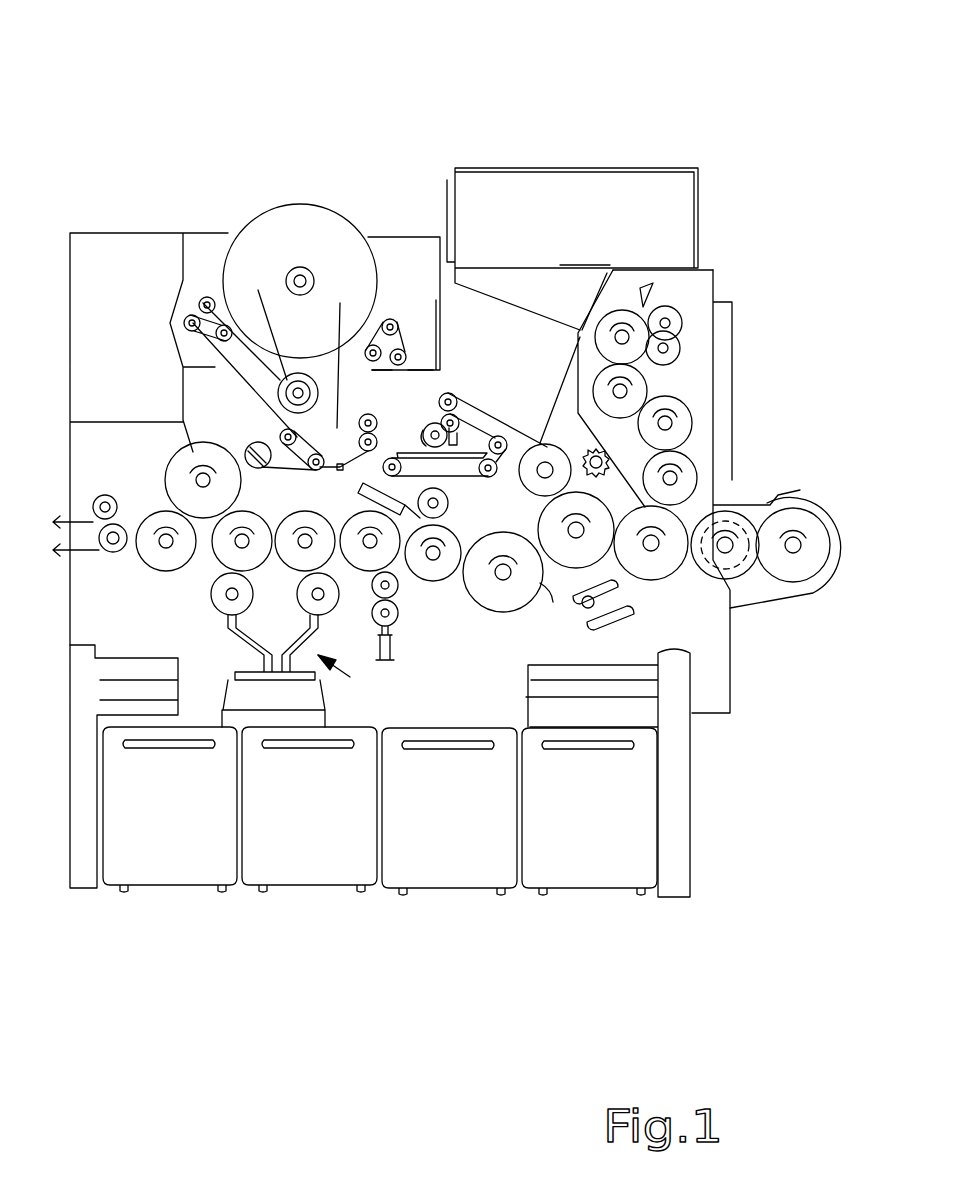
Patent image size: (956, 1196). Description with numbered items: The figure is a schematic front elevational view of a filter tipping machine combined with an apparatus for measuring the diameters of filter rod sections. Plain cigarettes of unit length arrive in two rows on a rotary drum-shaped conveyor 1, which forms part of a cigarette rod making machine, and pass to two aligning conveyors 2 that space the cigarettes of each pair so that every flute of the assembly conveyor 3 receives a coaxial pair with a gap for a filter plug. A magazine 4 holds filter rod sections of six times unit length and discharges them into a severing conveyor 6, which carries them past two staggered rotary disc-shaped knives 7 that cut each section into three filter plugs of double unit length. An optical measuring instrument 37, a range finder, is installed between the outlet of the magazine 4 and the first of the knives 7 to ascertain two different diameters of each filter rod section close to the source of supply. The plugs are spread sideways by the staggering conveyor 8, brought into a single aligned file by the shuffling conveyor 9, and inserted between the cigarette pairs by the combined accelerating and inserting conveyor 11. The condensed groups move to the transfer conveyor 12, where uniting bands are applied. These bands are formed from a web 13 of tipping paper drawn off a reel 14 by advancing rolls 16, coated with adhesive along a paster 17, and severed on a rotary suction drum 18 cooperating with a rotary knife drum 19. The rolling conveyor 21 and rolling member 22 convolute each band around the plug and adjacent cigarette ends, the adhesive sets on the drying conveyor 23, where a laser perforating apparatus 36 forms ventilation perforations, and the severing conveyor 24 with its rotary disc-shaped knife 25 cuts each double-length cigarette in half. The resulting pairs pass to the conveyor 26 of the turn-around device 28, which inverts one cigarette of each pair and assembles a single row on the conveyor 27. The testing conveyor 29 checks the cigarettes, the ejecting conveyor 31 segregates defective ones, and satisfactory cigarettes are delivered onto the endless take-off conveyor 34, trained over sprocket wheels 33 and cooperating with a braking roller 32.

The rotary drum-shaped conveyor 1 is at (784, 571).
The aligning conveyors 2 is at (752, 560).
The assembly conveyor 3 is at (690, 562).
The magazine 4 is at (633, 197).
The severing conveyor 6 is at (612, 310).
The rotary disc-shaped knives 7 is at (675, 347).
The staggering conveyor 8 is at (637, 397).
The shuffling conveyor 9 is at (678, 427).
The combined accelerating and inserting conveyor 11 is at (688, 482).
The transfer conveyor 12 is at (606, 560).
The web of tipping paper 13 is at (292, 430).
The bobbin or reel 14 is at (258, 290).
The advancing rolls 16 is at (340, 303).
The paster 17 is at (428, 414).
The rotary suction drum 18 is at (582, 332).
The rotary knife drum 19 is at (652, 568).
The rolling conveyor 21 is at (537, 607).
The rolling member 22 is at (645, 579).
The drying conveyor 23 is at (512, 612).
The severing conveyor 24 is at (373, 563).
The rotary disc-shaped knife 25 is at (438, 572).
The rotary drum-shaped conveyor 26 is at (298, 552).
The rotary drum-shaped conveyor 27 is at (200, 570).
The turn-around or inverting device 28 is at (351, 682).
The testing conveyor 29 is at (172, 325).
The ejecting or expelling conveyor 31 is at (157, 557).
The braking roller 32 is at (100, 495).
The pulleys or sprocket wheels 33 is at (150, 500).
The endless take-off conveyor 34 is at (53, 520).
The perforating apparatus 36 is at (493, 604).
The optical measuring instrument 37 is at (643, 283).